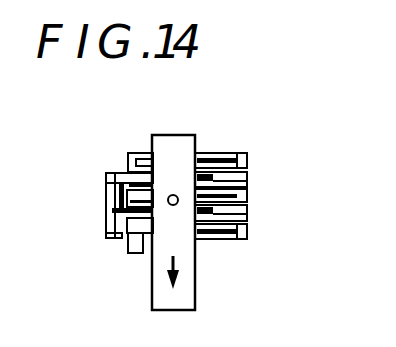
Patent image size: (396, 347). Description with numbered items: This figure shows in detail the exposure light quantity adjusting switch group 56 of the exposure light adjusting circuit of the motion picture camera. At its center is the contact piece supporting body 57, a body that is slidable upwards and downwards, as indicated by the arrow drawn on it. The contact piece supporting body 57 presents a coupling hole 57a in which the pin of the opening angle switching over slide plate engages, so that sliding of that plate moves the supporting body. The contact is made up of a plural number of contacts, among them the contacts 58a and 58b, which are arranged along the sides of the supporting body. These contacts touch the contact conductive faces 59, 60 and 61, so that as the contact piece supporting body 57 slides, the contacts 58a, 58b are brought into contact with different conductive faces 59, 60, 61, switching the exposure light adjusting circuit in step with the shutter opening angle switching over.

The exposure light quantity adjusting switch group 56 is at (107, 172).
The contact piece supporting body 57 is at (253, 106).
The coupling hole 57a is at (174, 195).
The contact 58a is at (112, 208).
The contact 58b is at (241, 193).
The contact conductive face 59 is at (107, 234).
The contact conductive face 60 is at (248, 211).
The contact conductive face 61 is at (248, 230).